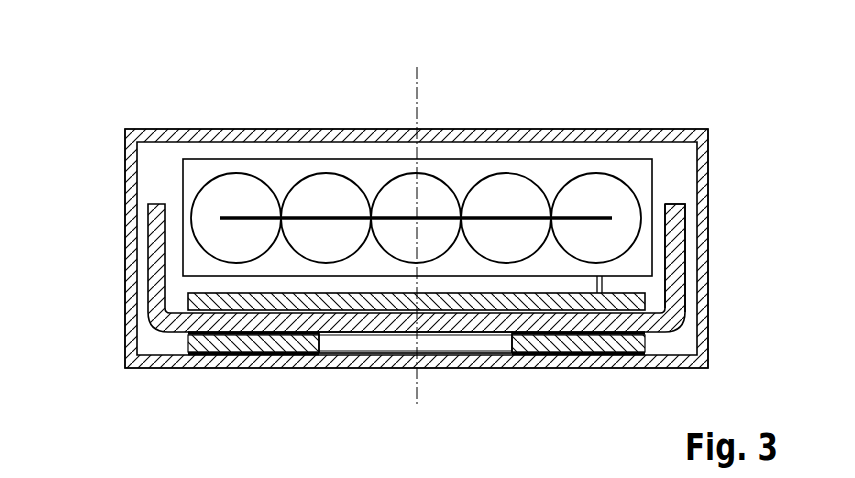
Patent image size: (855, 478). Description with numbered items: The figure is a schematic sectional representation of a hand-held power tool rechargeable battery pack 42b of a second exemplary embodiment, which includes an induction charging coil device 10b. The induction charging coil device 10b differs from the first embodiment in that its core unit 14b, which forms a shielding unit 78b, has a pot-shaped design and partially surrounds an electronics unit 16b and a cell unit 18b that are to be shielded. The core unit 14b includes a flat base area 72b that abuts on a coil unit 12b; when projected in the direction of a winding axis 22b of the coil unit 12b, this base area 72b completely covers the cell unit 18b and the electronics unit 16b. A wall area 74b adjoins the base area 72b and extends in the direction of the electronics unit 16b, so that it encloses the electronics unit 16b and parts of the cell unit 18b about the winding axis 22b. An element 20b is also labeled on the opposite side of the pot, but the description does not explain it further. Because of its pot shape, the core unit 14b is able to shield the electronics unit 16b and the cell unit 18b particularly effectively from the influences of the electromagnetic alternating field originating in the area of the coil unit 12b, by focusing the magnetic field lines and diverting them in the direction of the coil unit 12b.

The hand-held power tool rechargeable battery pack 42b is at (110, 92).
The induction charging coil device 10b is at (120, 331).
The coil unit 12b is at (254, 337).
The core unit 14b is at (340, 318).
The shielding unit 78b is at (415, 386).
The electronics unit 16b is at (485, 300).
The cell unit 18b is at (567, 168).
The holding element 20b is at (670, 200).
The winding axis 22b is at (417, 91).
The base area 72b is at (557, 320).
The wall area 74b is at (157, 263).